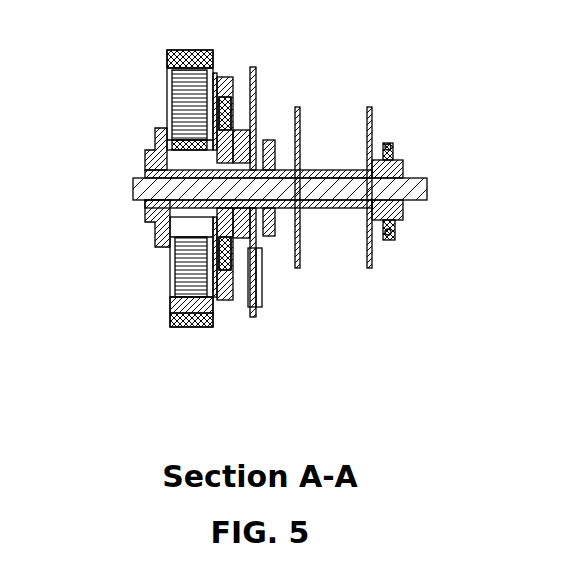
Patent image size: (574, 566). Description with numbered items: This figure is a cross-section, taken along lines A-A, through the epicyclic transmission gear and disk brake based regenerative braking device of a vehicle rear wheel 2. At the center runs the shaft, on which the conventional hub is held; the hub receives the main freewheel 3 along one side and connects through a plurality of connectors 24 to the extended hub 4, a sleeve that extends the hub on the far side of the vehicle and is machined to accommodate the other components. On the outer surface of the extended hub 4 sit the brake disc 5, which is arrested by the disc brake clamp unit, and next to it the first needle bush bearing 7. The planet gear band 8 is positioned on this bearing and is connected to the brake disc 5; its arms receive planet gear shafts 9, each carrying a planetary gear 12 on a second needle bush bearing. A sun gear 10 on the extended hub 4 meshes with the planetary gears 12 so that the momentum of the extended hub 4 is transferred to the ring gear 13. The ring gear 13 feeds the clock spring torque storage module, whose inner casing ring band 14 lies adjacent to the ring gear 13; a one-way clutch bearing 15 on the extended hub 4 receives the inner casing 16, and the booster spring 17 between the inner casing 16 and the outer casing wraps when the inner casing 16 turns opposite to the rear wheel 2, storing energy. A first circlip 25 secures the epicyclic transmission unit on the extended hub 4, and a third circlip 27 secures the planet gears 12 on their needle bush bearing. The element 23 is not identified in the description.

The rear wheel 2 is at (402, 210).
The main freewheel 3 is at (403, 208).
The extended hub 4 is at (140, 172).
The brake disc 5 is at (253, 300).
The first needle bush bearing 7 is at (237, 125).
The planet gear band 8 is at (258, 263).
The planet gear shaft 9 is at (200, 115).
The sun gear 10 is at (165, 243).
The planetary gear 12 is at (168, 297).
The ring gear 13 is at (222, 302).
The inner casing ring band 14 is at (187, 325).
The one-way clutch bearing 15 is at (147, 152).
The inner casing 16 is at (160, 150).
The booster spring 17 is at (167, 317).
The bracket 23 is at (271, 139).
The connector 24 is at (297, 110).
The first circlip 25 is at (150, 213).
The third circlip 27 is at (202, 62).